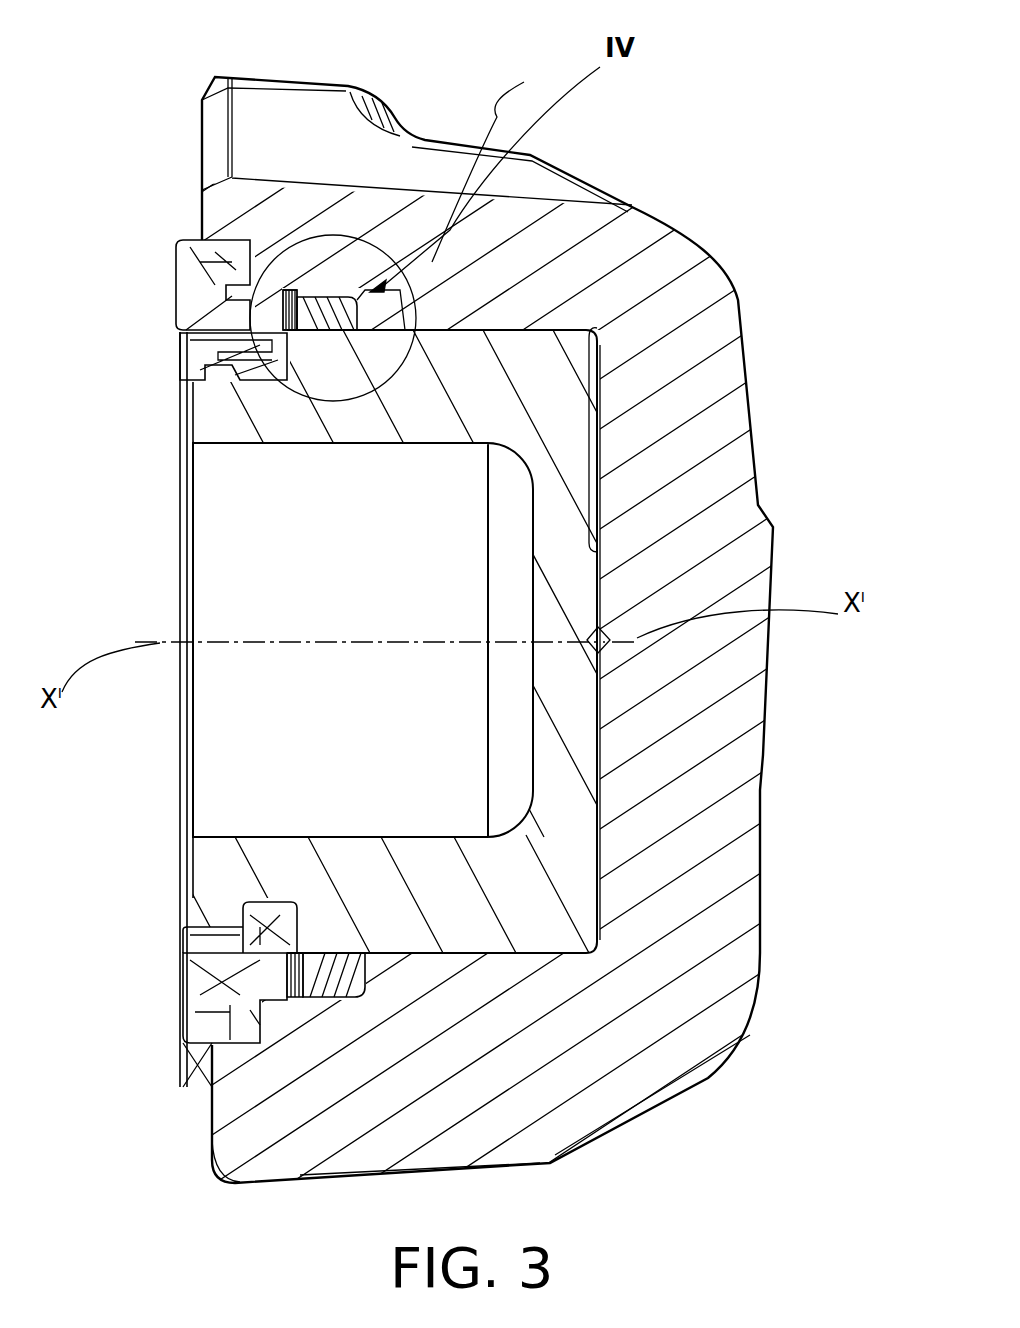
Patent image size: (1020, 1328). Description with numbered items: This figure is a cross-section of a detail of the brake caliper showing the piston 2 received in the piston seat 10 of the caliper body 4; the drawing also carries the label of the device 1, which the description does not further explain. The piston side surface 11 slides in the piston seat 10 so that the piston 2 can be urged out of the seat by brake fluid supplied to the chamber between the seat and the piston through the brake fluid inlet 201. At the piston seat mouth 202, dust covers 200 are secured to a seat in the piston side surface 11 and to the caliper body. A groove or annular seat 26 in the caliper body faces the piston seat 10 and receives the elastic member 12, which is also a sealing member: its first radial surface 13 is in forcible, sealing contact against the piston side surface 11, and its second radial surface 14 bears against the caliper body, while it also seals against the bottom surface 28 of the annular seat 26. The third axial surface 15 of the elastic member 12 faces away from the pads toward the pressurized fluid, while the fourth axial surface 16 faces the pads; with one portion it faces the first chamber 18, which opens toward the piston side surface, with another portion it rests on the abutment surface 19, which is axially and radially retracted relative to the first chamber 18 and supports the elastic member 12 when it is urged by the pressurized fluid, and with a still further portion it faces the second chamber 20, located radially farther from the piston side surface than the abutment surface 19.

The tap assembly 1 is at (488, 159).
The piston 2 is at (263, 427).
The caliper body 4 is at (520, 257).
The piston seat 10 is at (598, 852).
The piston side surface 11 is at (463, 953).
The elastic member 12 is at (317, 290).
The first radial surface 13 is at (317, 947).
The second radial surface 14 is at (230, 1185).
The third axial surface 15 is at (390, 955).
The fourth axial surface 16 is at (197, 1070).
The first chamber 18 is at (290, 295).
The abutment surface 19 is at (337, 300).
The second chamber 20 is at (213, 250).
The annular seat 26 is at (385, 335).
The bottom surface 28 is at (370, 300).
The dust covers 200 is at (195, 1012).
The brake fluid inlet 201 is at (600, 412).
The piston seat mouth 202 is at (180, 331).